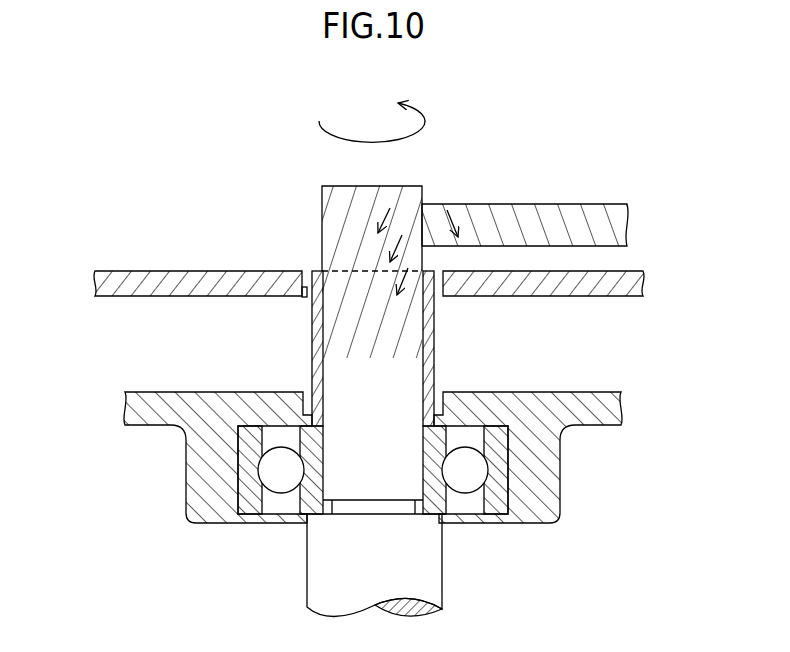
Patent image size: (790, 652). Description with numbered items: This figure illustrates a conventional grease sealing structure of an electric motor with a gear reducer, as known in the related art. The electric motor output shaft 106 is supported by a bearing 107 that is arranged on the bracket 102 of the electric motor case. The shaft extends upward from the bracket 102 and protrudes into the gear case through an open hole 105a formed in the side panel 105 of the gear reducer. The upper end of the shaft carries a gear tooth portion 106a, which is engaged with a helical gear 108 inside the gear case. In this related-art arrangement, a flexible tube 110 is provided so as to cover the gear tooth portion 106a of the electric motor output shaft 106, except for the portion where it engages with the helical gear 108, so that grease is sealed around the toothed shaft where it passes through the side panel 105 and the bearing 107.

The bracket 102 is at (197, 477).
The side panel 105 is at (137, 285).
The open hole 105a is at (307, 294).
The electric motor output shaft 106 is at (315, 572).
The gear tooth portion 106a is at (327, 232).
The bearing 107 is at (492, 514).
The helical gear 108 is at (557, 212).
The flexible tube 110 is at (318, 357).